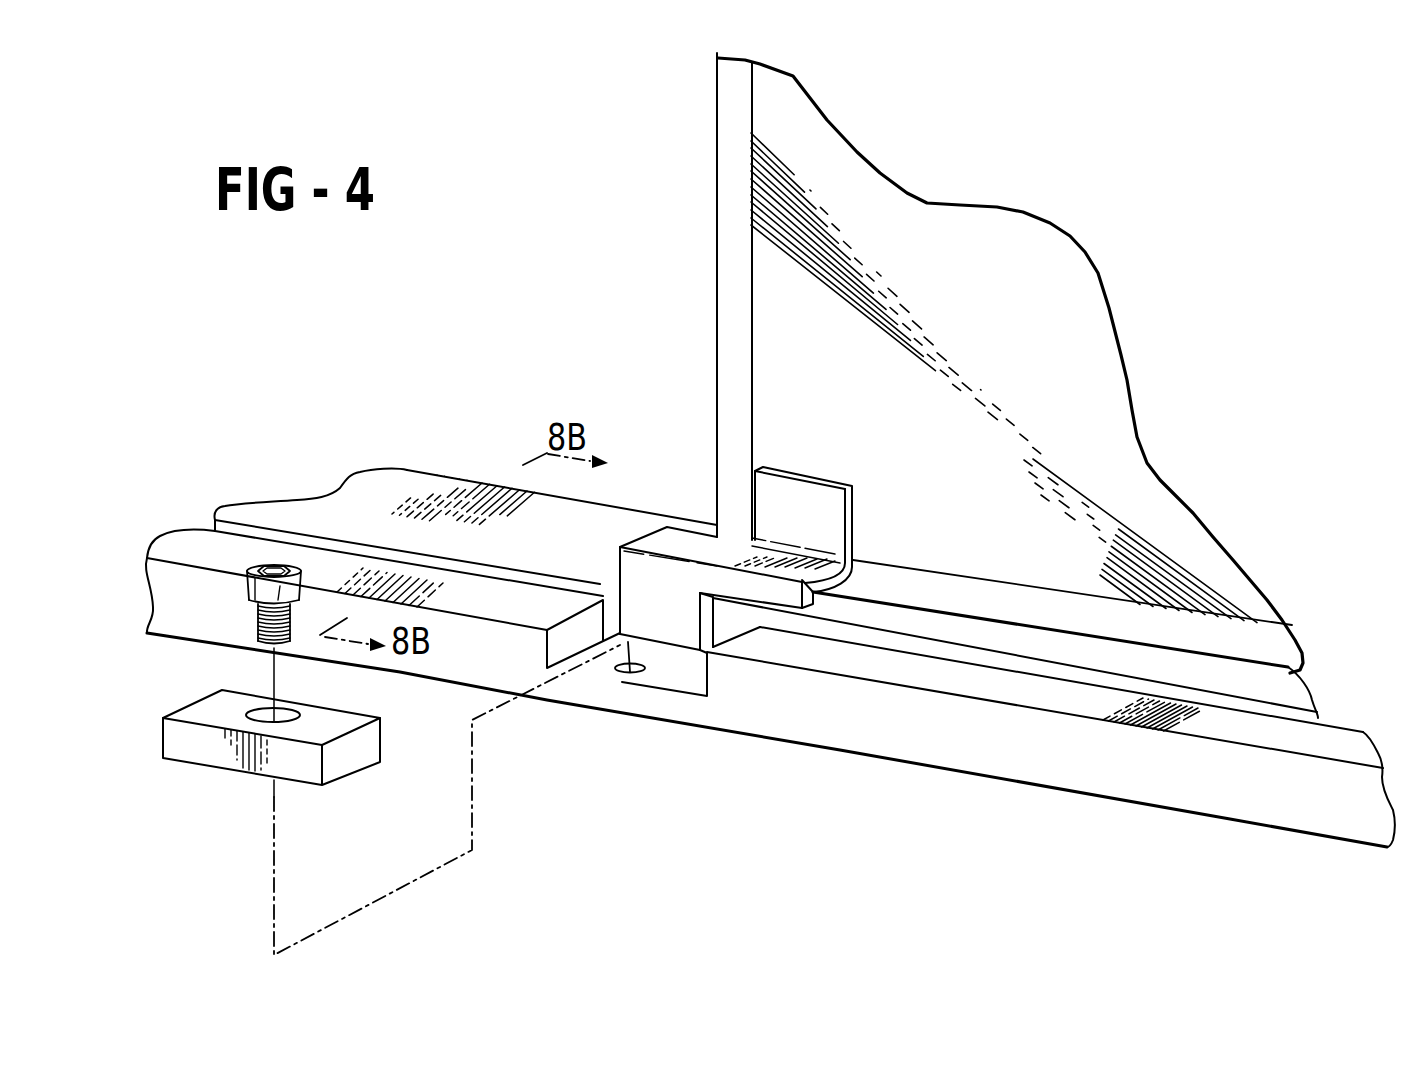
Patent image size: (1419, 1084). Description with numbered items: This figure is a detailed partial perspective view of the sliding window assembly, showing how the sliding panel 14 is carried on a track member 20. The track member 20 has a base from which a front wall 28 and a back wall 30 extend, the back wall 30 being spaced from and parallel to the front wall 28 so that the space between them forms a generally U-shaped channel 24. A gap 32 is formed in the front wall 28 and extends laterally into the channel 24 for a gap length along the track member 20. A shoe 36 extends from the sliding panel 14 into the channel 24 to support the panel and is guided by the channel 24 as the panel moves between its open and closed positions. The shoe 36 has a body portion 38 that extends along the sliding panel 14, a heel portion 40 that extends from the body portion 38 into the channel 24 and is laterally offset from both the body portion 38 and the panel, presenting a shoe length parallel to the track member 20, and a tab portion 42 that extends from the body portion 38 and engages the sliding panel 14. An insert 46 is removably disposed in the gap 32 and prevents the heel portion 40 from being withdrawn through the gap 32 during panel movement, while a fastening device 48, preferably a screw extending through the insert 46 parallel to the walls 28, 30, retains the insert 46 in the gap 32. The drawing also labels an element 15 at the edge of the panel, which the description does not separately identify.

The sliding panel 14 is at (780, 300).
The frame 15 is at (717, 183).
The track member 20 is at (394, 463).
The channel 24 is at (298, 537).
The front wall 28 is at (187, 546).
The back wall 30 is at (440, 517).
The gap 32 is at (643, 677).
The shoe 36 is at (872, 516).
The body portion 38 is at (697, 540).
The heel portion 40 is at (672, 622).
The tab portion 42 is at (767, 500).
The insert 46 is at (208, 747).
The fastening device 48 is at (252, 587).